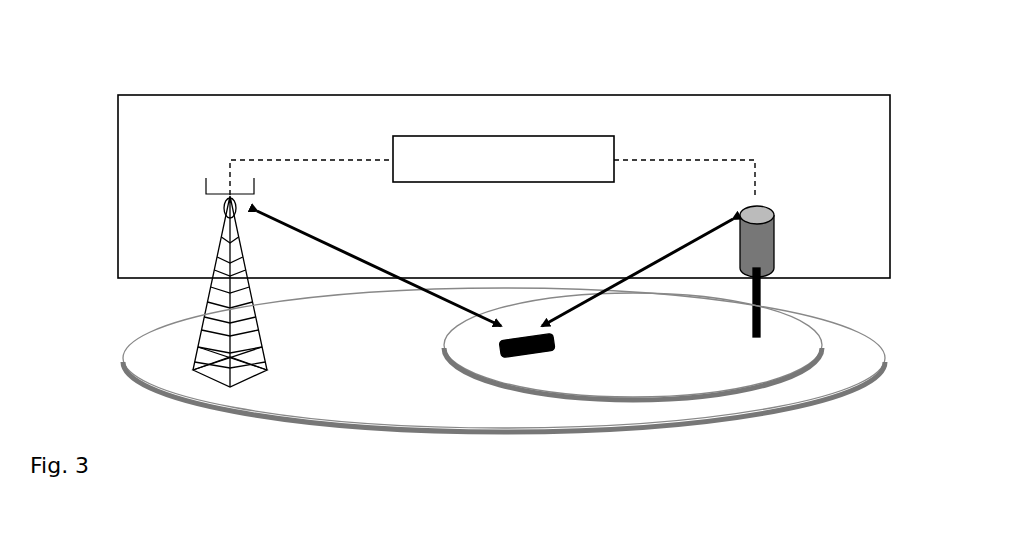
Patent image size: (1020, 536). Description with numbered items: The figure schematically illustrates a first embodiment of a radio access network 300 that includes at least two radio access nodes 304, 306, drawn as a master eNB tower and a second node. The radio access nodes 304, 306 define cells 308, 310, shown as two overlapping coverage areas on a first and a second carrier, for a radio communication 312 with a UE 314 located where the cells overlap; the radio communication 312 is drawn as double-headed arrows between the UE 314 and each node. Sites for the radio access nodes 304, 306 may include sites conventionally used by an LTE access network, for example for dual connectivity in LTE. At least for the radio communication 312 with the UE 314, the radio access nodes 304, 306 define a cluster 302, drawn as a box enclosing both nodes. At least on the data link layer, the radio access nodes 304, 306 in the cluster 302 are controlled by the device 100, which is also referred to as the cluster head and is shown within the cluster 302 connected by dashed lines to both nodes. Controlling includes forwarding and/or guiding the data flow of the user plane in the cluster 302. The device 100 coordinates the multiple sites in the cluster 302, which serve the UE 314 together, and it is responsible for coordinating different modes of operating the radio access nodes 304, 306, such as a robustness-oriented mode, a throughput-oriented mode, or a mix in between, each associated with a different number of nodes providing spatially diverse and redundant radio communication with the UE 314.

The radio access network 300 is at (157, 22).
The cluster 302 is at (330, 93).
The device 100 is at (593, 135).
The radio access node 304 is at (207, 177).
The radio access node 306 is at (768, 198).
The cell 308 is at (417, 407).
The cell 310 is at (638, 380).
The radio communication 312 is at (650, 262).
The UE 314 is at (544, 370).